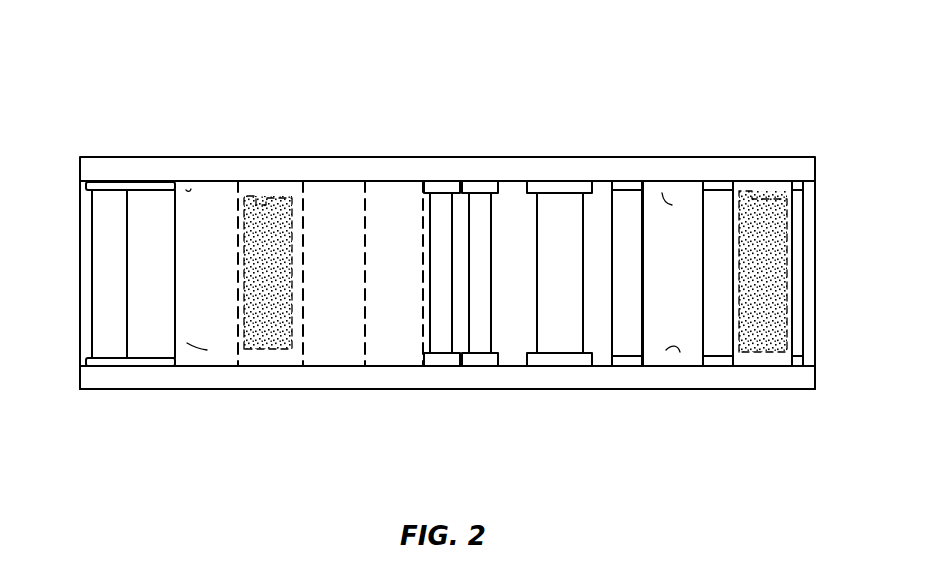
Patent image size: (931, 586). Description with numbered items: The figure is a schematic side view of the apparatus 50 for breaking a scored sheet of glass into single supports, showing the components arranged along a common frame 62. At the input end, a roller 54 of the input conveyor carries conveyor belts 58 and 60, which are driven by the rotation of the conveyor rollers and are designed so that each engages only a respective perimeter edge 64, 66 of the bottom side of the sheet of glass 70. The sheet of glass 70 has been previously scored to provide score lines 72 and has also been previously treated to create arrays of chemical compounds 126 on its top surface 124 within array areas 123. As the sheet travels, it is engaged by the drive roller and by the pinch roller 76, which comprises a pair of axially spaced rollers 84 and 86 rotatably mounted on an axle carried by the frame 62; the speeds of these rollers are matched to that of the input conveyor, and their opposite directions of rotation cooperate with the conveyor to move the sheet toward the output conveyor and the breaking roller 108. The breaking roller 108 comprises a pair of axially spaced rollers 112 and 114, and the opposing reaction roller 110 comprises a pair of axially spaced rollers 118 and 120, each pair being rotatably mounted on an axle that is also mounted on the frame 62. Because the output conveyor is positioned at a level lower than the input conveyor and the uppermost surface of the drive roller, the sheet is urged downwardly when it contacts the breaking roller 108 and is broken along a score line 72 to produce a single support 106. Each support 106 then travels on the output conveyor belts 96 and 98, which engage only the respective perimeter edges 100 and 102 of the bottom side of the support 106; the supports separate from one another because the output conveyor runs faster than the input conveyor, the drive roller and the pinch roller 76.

The apparatus 50 is at (137, 442).
The roller 54 is at (107, 316).
The conveyor belt 58 is at (140, 365).
The conveyor belt 60 is at (133, 183).
The frame 62 is at (234, 378).
The perimeter edge 64 is at (207, 350).
The perimeter edge 66 is at (190, 188).
The sheet of glass 70 is at (333, 240).
The score lines 72 is at (365, 185).
The pinch roller 76 is at (481, 222).
The roller 84 is at (484, 358).
The roller 86 is at (476, 188).
The conveyor belt 96 is at (630, 362).
The conveyor belt 98 is at (631, 187).
The perimeter edge 100 is at (653, 350).
The perimeter edge 102 is at (680, 197).
The single section or support 106 is at (678, 247).
The breaking roller 108 is at (553, 228).
The reaction roller 110 is at (445, 257).
The roller 112 is at (567, 360).
The roller 114 is at (558, 262).
The roller 118 is at (443, 358).
The roller 120 is at (447, 215).
The array areas 123 is at (276, 350).
The top surface 124 is at (390, 203).
The arrays of chemical compounds 126 is at (277, 273).